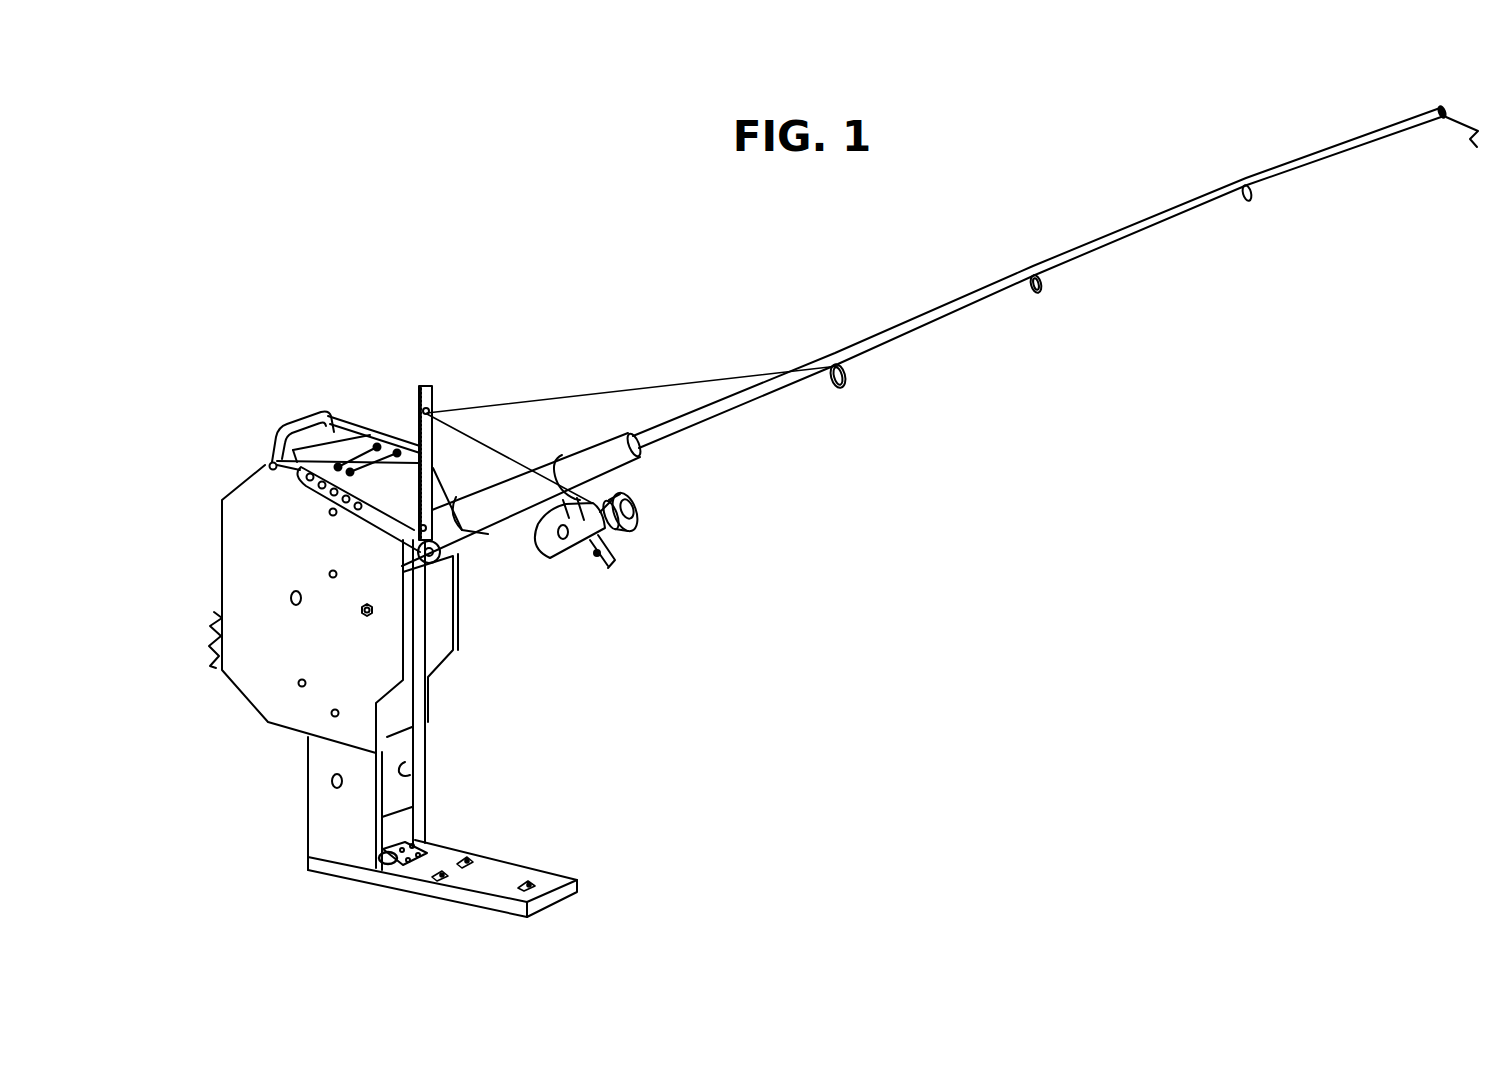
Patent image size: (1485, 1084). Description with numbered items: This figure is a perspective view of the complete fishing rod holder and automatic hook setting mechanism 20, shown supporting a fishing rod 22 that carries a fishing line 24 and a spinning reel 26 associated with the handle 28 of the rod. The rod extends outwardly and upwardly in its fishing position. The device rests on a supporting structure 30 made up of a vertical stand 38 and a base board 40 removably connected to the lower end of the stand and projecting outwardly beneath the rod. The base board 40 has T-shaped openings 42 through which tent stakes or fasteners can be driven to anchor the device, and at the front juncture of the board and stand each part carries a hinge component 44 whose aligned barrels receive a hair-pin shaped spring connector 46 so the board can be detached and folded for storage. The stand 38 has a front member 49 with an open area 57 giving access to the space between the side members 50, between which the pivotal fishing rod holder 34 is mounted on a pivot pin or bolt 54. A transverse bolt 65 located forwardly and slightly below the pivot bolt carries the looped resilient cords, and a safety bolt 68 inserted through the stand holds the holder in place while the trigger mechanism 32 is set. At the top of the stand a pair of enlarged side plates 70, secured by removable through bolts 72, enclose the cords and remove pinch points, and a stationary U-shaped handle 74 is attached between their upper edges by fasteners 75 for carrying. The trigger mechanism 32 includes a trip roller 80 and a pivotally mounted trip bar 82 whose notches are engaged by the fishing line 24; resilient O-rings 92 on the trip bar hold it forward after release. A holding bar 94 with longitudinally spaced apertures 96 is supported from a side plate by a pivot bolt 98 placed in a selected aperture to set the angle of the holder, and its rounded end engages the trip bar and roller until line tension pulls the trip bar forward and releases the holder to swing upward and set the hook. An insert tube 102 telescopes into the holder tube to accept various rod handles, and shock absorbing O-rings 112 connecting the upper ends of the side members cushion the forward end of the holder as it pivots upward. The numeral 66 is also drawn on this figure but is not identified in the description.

The fishing rod holder and automatic hook setting mechanism 20 is at (345, 417).
The fishing rod 22 is at (1203, 205).
The fishing line 24 is at (714, 392).
The spinning reel 26 is at (607, 532).
The handle 28 is at (625, 452).
The supporting structure 30 is at (478, 663).
The trigger mechanism 32 is at (480, 380).
The pivotal fishing rod holder 34 is at (210, 605).
The vertical stand 38 is at (438, 797).
The base board 40 is at (555, 882).
The T-shaped openings 42 is at (470, 857).
The hinge component 44 is at (412, 862).
The spring connector 46 is at (380, 853).
The front member 49 is at (400, 708).
The side members 50 is at (316, 830).
The pivot pin or bolt 54 is at (333, 578).
The open area 57 is at (402, 770).
The transverse bolt 65 is at (366, 618).
The hole 66 is at (330, 781).
The safety bolt 68 is at (292, 604).
The side plates 70 is at (457, 605).
The through bolts 72 is at (308, 741).
The U-shaped handle 74 is at (307, 410).
The fasteners 75 is at (270, 460).
The trip roller 80 is at (442, 560).
The trip bar 82 is at (425, 386).
The resilient O-rings 92 is at (443, 488).
The holding bar 94 is at (372, 514).
The longitudinally spaced apertures 96 is at (270, 473).
The pivot bolt 98 is at (330, 496).
The insert tube 102 is at (545, 455).
The shock absorbing O-rings 112 is at (389, 448).